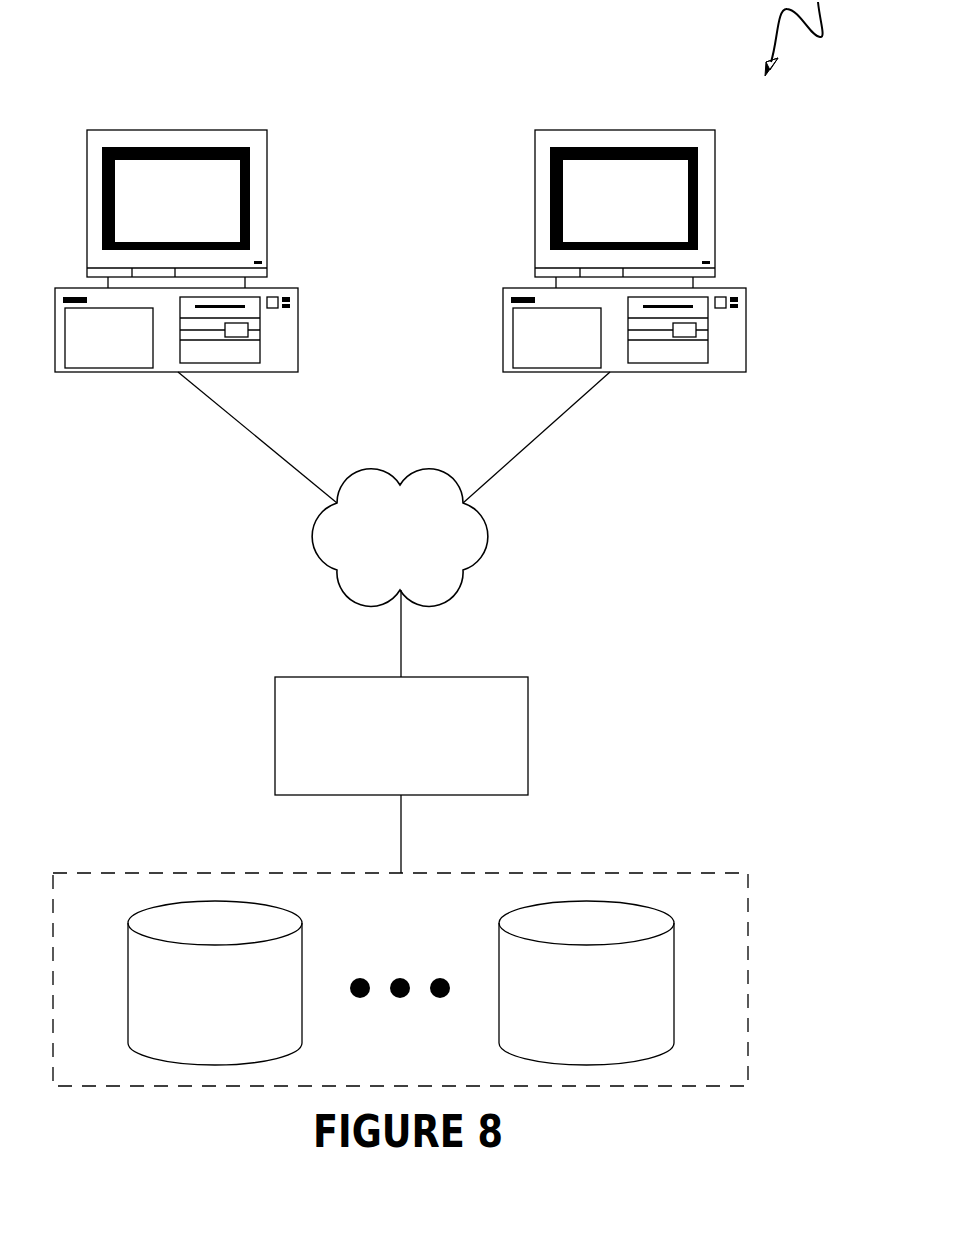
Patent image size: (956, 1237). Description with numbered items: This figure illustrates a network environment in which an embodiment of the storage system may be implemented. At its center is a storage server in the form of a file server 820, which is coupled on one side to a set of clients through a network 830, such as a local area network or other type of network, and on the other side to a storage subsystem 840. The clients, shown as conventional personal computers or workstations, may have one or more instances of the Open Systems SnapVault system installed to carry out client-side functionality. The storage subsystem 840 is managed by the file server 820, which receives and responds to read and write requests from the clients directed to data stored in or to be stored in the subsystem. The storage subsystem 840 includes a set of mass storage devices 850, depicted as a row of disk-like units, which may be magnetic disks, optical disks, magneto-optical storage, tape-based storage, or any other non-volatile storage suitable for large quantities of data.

The network 830 is at (312, 537).
The file server 820 is at (275, 697).
The storage subsystem 840 is at (233, 873).
The mass storage devices 850 is at (133, 919).